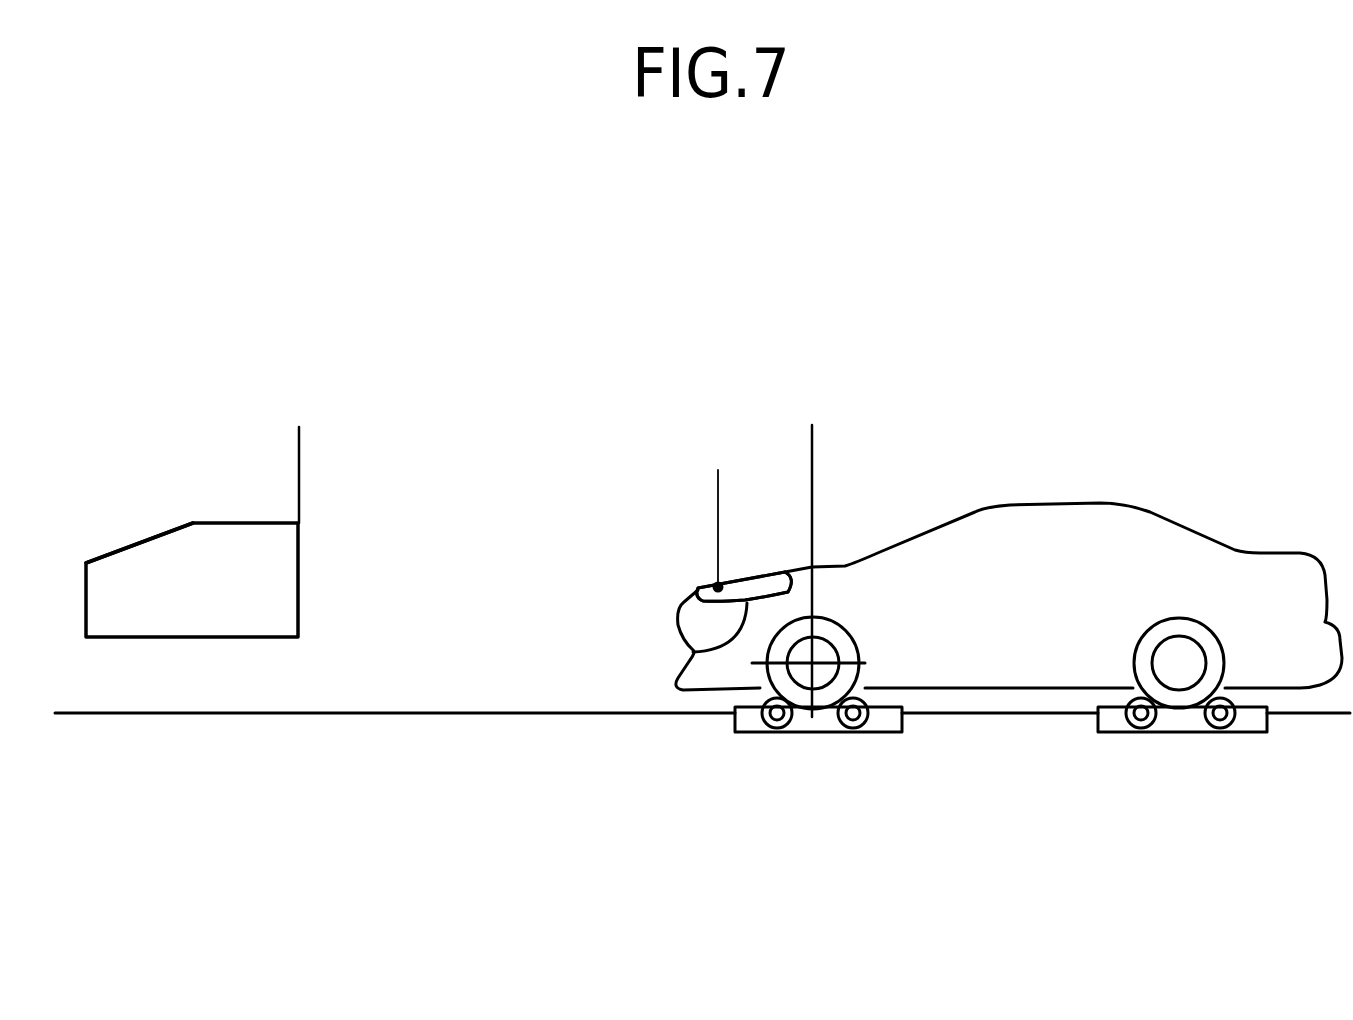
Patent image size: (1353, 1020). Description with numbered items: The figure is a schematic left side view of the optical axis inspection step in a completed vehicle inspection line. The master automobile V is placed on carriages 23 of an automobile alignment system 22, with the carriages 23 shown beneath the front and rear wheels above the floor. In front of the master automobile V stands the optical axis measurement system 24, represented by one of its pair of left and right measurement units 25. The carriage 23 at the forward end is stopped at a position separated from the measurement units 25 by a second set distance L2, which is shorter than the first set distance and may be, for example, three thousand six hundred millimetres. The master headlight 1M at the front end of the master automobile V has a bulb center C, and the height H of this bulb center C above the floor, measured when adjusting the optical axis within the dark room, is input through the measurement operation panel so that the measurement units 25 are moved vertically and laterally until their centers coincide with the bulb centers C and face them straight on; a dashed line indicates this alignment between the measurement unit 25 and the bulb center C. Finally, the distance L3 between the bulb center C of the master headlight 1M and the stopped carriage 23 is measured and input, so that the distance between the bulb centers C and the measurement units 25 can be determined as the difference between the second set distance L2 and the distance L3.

The optical axis measurement system 24 is at (233, 506).
The measurement unit 25 is at (128, 567).
The automobile alignment system 22 is at (876, 676).
The carriage 23 is at (1001, 736).
The master headlight 1M is at (693, 650).
The bulb center C is at (718, 582).
The master automobile V is at (1014, 518).
The second set distance L2 is at (801, 451).
The distance between bulb centers and carriage L3 is at (801, 495).
The height of bulb centers H is at (712, 587).